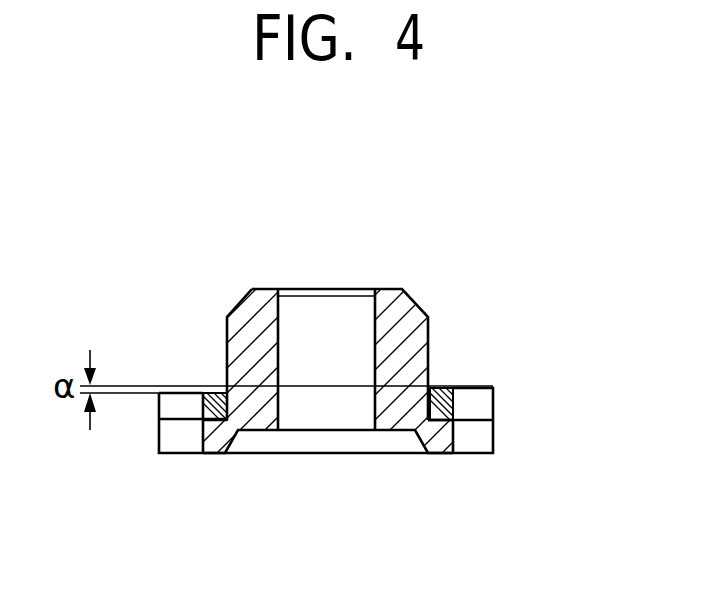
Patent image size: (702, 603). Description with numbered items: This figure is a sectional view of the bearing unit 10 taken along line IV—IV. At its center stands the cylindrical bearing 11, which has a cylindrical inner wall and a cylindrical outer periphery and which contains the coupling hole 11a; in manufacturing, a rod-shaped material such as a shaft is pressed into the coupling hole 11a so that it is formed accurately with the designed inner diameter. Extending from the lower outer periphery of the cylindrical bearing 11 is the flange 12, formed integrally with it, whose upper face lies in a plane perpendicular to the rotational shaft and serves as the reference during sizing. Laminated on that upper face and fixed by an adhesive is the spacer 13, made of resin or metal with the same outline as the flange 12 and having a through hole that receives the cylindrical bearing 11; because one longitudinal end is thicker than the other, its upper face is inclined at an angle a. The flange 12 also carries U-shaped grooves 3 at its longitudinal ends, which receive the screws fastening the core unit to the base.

The U-shaped groove 3 is at (177, 438).
The bearing unit 10 is at (440, 226).
The cylindrical bearing 11 is at (430, 336).
The coupling hole 11a is at (280, 322).
The flange 12 is at (495, 445).
The spacer 13 is at (495, 396).